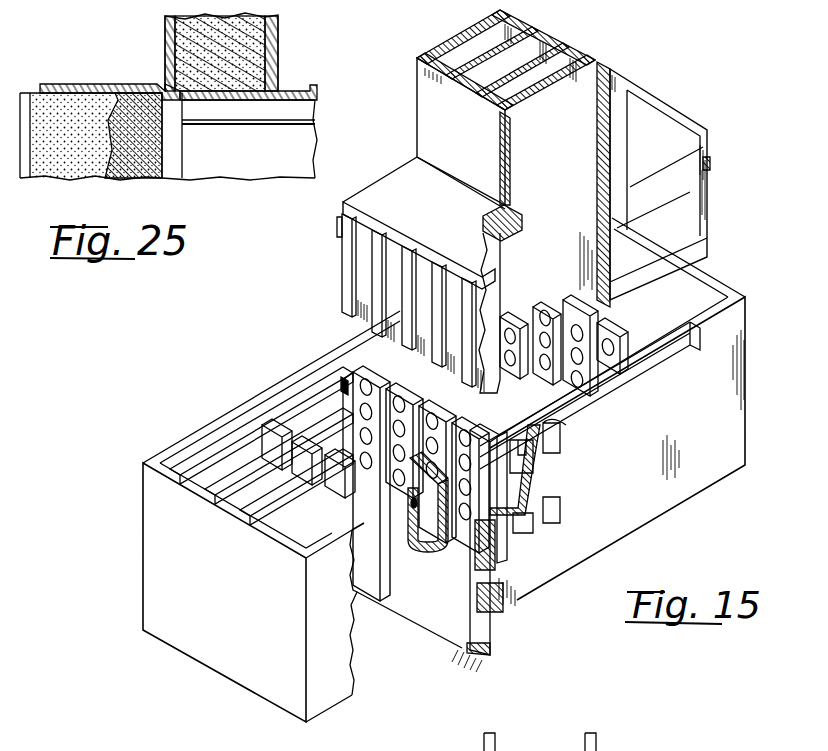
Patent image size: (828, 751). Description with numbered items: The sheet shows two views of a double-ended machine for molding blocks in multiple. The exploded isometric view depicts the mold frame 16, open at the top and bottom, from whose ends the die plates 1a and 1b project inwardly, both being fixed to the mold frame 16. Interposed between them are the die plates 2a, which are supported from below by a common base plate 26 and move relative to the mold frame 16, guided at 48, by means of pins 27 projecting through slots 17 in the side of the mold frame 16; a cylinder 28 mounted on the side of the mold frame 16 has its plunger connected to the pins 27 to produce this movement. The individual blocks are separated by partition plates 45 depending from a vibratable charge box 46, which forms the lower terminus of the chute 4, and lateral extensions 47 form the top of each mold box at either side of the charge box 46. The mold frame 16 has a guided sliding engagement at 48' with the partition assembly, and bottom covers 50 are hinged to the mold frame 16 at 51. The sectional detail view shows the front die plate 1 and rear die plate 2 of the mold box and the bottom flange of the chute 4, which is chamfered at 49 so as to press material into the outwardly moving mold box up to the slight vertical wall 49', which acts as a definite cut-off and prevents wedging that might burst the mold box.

In FIG. 25, the front die plate 1 is at (25, 172).
In FIG. 25, the rear die plate 2 is at (180, 152).
In FIG. 25, the chute 4 is at (279, 40).
In FIG. 25, the chamfer 49 is at (178, 70).
In FIG. 25, the vertical wall 49' is at (133, 119).
In FIG. 15, the mold frame 16 is at (184, 441).
In FIG. 15, the die plate 1a is at (310, 440).
In FIG. 15, the die plate 1b is at (583, 343).
In FIG. 15, the die plates 2a is at (417, 395).
In FIG. 15, the slots 17 is at (503, 540).
In FIG. 15, the base plate 26 is at (440, 510).
In FIG. 15, the pins 27 is at (540, 538).
In FIG. 15, the partition plates 45 is at (405, 312).
In FIG. 15, the charge box 46 is at (428, 116).
In FIG. 15, the lateral extensions 47 is at (424, 223).
In FIG. 15, the guide 48 is at (501, 619).
In FIG. 15, the guided sliding engagement 48' is at (530, 278).
In FIG. 15, the bottom covers 50 is at (437, 628).
In FIG. 15, the hinge 51 is at (411, 504).
In FIG. 15, the cylinder 28 is at (540, 742).